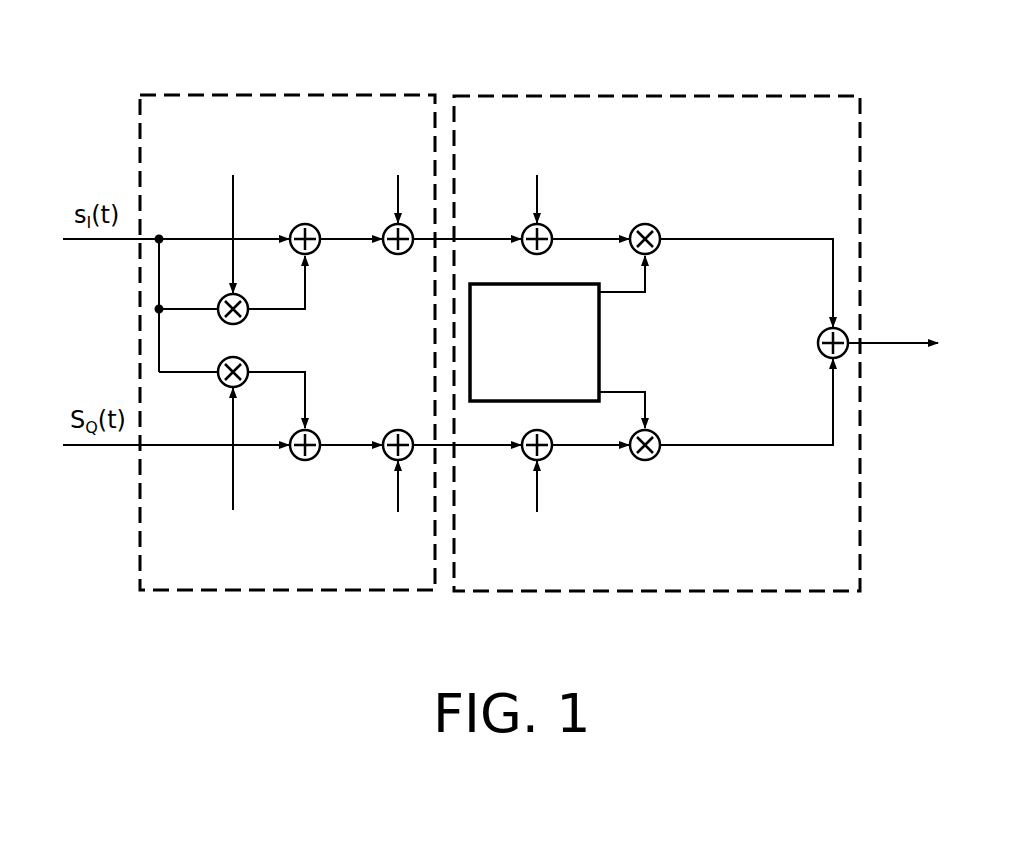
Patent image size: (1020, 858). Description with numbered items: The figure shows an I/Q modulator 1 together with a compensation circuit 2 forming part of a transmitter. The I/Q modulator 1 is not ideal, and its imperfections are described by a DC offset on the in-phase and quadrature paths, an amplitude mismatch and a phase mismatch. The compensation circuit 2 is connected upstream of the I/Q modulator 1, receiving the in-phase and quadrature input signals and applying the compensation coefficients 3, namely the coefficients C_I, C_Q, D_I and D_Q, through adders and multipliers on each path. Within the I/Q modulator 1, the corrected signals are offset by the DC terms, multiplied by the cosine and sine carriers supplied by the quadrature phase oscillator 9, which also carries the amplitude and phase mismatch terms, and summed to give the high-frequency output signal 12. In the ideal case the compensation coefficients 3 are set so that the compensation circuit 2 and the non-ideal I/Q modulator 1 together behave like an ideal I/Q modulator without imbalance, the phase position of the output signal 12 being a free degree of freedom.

The I/Q modulator 1 is at (680, 95).
The compensation circuit 2 is at (312, 95).
The compensation coefficients 3 is at (221, 157).
The quadrature phase oscillator 9 is at (600, 352).
The output signal 12 is at (887, 350).